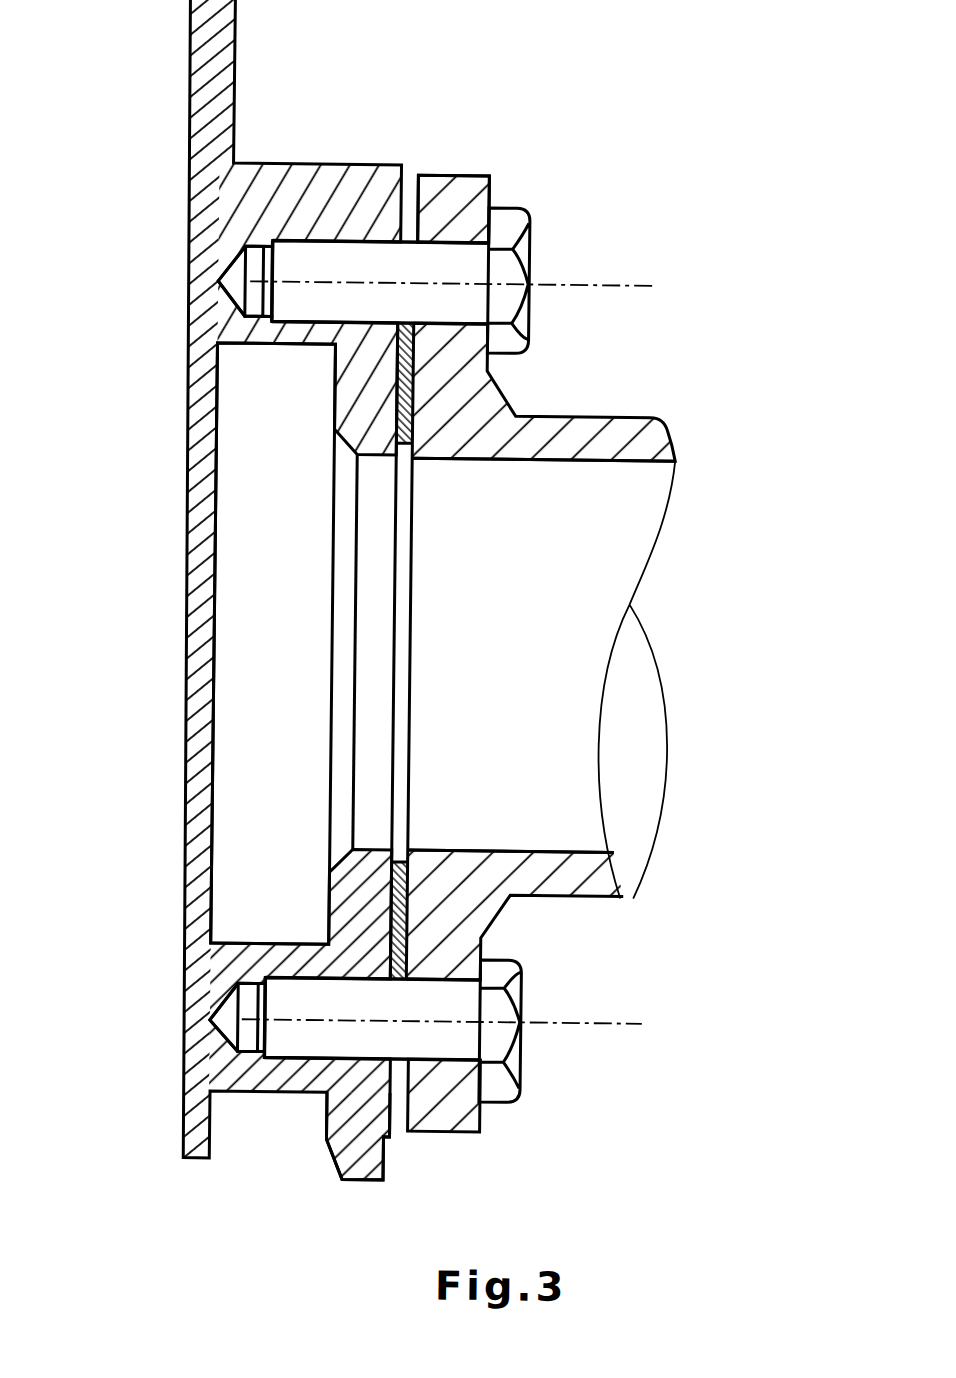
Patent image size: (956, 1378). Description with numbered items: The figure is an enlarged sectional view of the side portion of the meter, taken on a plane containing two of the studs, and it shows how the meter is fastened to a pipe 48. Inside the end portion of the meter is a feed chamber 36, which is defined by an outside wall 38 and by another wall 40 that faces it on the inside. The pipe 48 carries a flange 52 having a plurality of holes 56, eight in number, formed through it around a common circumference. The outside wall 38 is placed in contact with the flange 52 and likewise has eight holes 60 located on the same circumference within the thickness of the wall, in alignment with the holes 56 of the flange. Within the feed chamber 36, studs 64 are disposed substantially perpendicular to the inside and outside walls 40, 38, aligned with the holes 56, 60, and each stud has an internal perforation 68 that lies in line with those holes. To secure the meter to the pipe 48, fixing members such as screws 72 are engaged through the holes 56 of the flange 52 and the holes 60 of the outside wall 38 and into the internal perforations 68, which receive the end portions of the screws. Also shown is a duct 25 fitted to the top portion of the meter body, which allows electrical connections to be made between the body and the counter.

The duct 25 is at (401, 798).
The feed chamber 36 is at (271, 827).
The outside wall 38 is at (375, 1152).
The inside wall 40 is at (204, 638).
The pipe 48 is at (634, 415).
The flange 52 is at (454, 172).
The holes 56 is at (473, 233).
The holes 60 is at (349, 240).
The studs 64 is at (297, 214).
The internal perforations 68 is at (483, 332).
The screws 72 is at (522, 251).